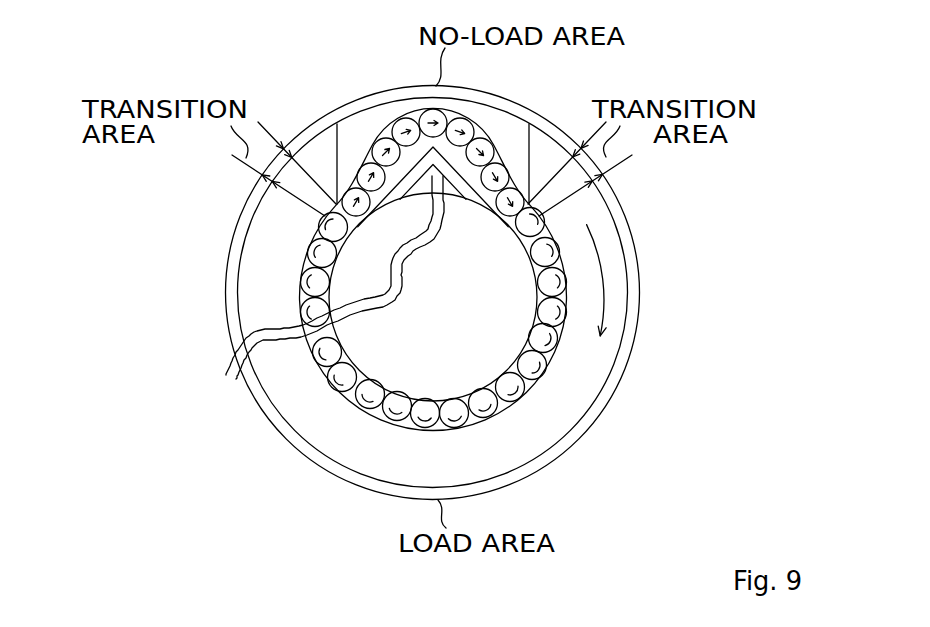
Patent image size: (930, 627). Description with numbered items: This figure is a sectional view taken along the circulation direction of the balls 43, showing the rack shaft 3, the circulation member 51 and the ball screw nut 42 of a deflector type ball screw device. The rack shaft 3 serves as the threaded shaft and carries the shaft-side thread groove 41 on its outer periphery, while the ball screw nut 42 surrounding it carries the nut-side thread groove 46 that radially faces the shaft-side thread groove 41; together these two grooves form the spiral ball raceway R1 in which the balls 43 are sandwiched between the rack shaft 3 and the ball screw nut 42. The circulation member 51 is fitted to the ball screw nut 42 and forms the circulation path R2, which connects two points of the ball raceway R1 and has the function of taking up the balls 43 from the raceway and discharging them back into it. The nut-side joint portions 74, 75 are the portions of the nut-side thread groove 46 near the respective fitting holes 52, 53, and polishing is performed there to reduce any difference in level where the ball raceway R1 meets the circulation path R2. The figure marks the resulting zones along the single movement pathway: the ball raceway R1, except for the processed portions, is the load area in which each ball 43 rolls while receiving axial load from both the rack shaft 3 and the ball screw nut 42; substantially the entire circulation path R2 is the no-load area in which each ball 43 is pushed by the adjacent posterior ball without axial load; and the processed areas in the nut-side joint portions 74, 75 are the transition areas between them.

The rack shaft 3 is at (428, 388).
The shaft-side thread groove 41 is at (364, 376).
The ball screw nut 42 is at (617, 207).
The balls 43 is at (528, 368).
The nut-side thread groove 46 is at (354, 401).
The circulation member 51 is at (376, 102).
The fitting hole 52 is at (520, 125).
The fitting hole 53 is at (338, 124).
The nut-side joint portion 74 is at (548, 205).
The nut-side joint portion 75 is at (319, 203).
The ball raceway R1 is at (476, 424).
The circulation path R2 is at (478, 132).